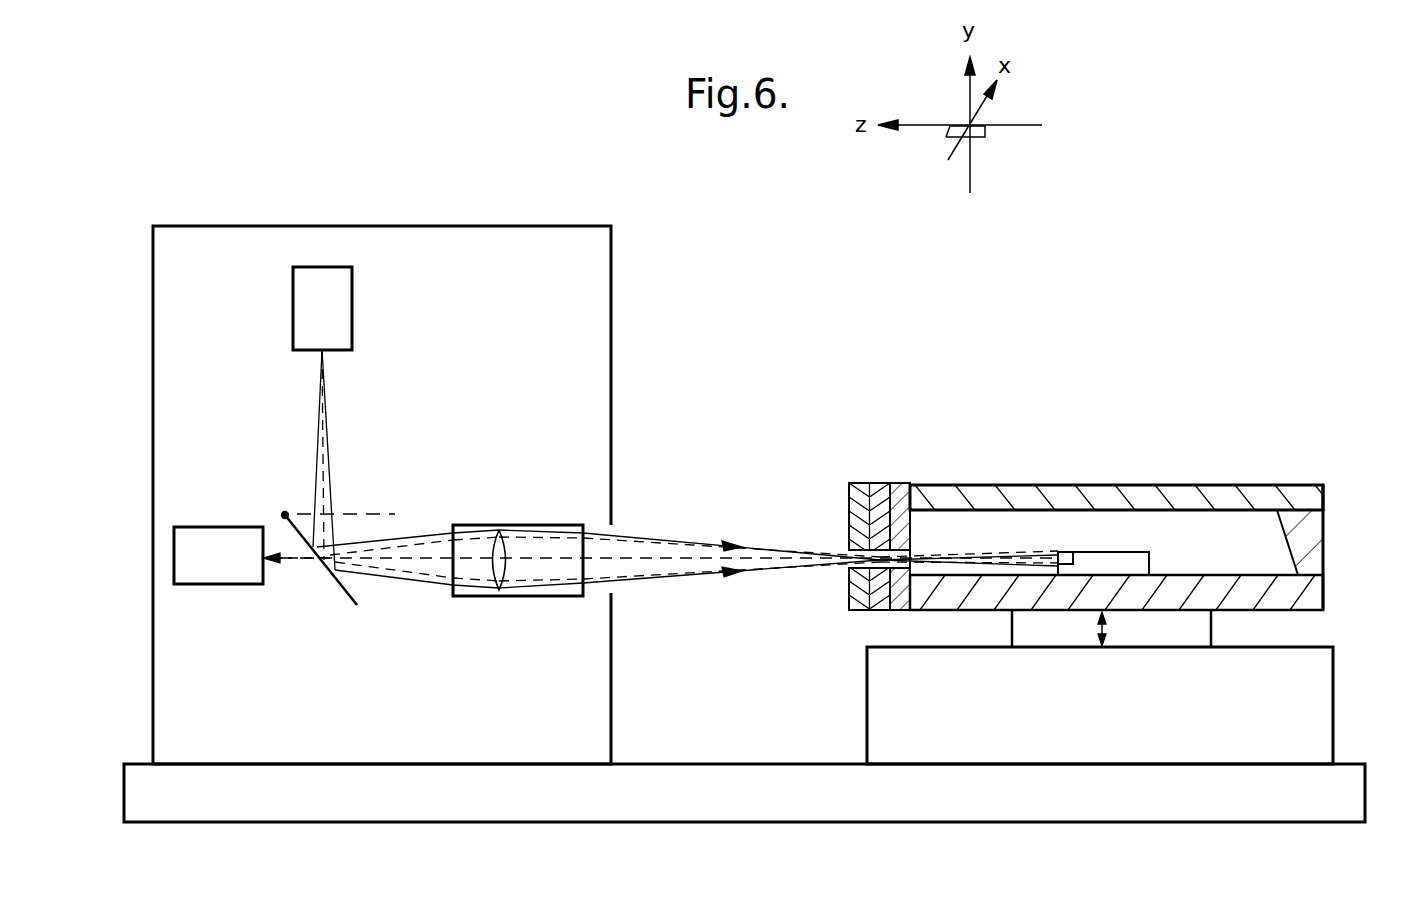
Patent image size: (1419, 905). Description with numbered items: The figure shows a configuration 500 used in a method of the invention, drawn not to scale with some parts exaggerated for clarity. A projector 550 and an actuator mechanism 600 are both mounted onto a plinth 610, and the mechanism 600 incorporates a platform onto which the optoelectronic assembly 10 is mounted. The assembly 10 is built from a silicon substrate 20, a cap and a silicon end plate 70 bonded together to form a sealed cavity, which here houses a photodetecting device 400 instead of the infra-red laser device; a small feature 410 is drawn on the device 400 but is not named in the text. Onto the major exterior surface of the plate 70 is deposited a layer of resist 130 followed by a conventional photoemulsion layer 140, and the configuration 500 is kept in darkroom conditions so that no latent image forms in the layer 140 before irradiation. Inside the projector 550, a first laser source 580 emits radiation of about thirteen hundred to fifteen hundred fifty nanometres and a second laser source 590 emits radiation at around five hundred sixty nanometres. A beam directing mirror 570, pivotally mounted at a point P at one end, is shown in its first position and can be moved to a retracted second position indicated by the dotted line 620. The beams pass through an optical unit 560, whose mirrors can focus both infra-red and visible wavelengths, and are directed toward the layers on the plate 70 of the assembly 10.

The configuration 500 is at (1248, 117).
The projector 550 is at (425, 218).
The second laser source 590 is at (343, 314).
The dotted line 620 is at (365, 512).
The first laser source 580 is at (214, 540).
The beam directing mirror 570 is at (336, 608).
The optical unit 560 is at (502, 510).
The photoemulsion layer 140 is at (856, 508).
The layer of resist 130 is at (877, 488).
The silicon end plate 70 is at (902, 488).
The optoelectronic assembly 10 is at (1148, 506).
The silicon substrate 20 is at (1310, 593).
The photodetecting device 400 is at (1130, 563).
The sample region 410 is at (1067, 557).
The actuator mechanism 600 is at (1320, 700).
The plinth 610 is at (1227, 800).